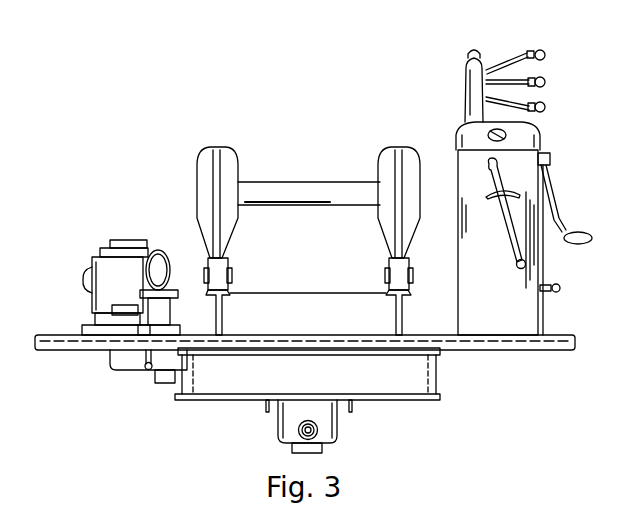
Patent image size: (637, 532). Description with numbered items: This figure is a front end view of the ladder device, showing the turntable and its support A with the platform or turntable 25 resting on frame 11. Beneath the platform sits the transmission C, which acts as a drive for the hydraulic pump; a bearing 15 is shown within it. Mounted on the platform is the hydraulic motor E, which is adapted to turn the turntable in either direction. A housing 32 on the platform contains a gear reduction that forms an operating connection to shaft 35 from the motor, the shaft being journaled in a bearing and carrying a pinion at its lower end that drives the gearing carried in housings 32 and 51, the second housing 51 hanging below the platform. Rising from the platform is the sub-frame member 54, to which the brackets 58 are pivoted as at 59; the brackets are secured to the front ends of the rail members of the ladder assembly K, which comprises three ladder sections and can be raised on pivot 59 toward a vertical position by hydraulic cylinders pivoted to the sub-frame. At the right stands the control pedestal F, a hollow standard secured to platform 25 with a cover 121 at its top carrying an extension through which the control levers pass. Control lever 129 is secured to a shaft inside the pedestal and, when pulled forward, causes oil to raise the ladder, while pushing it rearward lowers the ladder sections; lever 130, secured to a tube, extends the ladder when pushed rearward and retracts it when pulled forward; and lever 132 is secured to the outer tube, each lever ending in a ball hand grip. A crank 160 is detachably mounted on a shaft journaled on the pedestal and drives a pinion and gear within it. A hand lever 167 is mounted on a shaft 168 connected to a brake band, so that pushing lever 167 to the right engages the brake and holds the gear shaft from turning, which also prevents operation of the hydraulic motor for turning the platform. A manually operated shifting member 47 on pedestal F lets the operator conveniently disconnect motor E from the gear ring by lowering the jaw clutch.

The frame 11 is at (184, 385).
The bearing 15 is at (318, 430).
The platform 25 is at (567, 334).
The housing 32 is at (116, 287).
The shaft 35 is at (120, 318).
The manually operated shifting member 47 is at (557, 283).
The housing 51 is at (110, 354).
The sub-frame member 54 is at (223, 320).
The brackets 58 is at (220, 262).
The pivot 59 is at (233, 276).
The cover 121 is at (534, 130).
The control lever 129 is at (514, 50).
The lever 130 is at (516, 78).
The lever 132 is at (517, 100).
The crank 160 is at (556, 200).
The hand lever 167 is at (500, 216).
The shaft 168 is at (516, 266).
The turntable and its support A is at (320, 374).
The transmission C is at (276, 430).
The hydraulic motor E is at (173, 254).
The control pedestal F is at (458, 190).
The ladder sections K is at (309, 182).